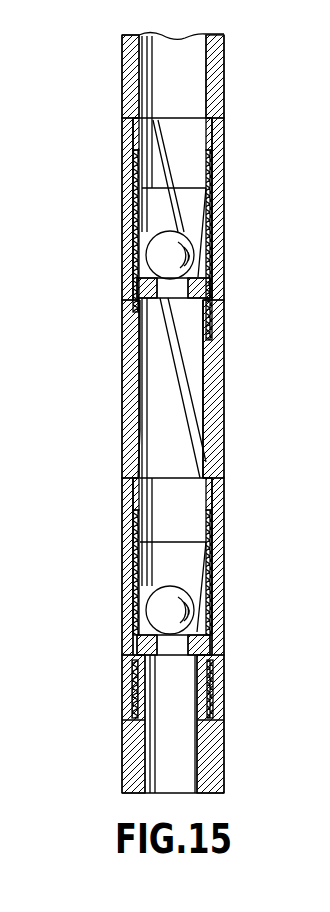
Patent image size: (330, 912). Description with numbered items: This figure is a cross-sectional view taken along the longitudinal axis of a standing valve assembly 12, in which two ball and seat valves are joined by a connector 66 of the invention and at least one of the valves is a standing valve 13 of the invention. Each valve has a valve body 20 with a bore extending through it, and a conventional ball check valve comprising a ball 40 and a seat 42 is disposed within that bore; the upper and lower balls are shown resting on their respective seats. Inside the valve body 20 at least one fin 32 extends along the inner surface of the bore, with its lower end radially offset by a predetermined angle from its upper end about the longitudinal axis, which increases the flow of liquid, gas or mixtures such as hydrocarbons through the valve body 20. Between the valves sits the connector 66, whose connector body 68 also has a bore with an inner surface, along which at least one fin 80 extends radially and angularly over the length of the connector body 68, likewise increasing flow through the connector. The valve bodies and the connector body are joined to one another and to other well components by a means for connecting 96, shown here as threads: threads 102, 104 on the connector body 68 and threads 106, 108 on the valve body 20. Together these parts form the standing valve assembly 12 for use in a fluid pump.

The standing valve assembly 12 is at (114, 312).
The standing valve 13 is at (222, 140).
The valve body 20 is at (222, 274).
The fin 32 is at (140, 151).
The ball 40 is at (150, 258).
The seat 42 is at (208, 291).
The connector 66 is at (117, 444).
The connector body 68 is at (221, 408).
The fin 80 is at (190, 448).
The means for connecting 96 is at (224, 209).
The threads 102 is at (124, 581).
The threads 104 is at (121, 350).
The threads 106 is at (216, 366).
The threads 108 is at (124, 218).